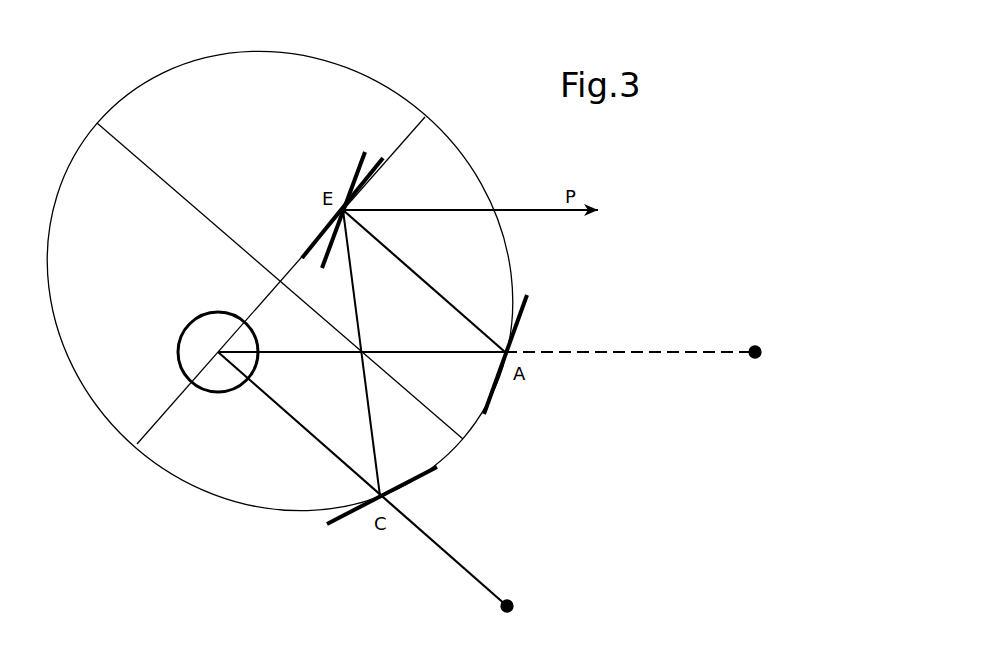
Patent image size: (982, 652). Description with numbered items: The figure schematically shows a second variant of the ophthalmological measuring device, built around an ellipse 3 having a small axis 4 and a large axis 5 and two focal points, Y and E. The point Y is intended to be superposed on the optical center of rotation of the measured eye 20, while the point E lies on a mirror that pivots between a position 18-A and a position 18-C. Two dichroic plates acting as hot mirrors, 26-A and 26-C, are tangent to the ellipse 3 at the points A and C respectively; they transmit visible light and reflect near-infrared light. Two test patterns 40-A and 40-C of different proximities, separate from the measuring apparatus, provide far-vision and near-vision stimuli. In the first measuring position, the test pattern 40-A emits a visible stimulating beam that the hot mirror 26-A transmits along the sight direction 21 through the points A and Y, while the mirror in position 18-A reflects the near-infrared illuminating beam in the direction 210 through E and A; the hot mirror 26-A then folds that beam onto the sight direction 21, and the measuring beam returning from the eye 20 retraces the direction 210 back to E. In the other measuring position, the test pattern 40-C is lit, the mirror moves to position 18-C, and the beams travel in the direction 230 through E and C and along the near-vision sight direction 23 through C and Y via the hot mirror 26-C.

The ellipse 3 is at (313, 55).
The small axis 4 is at (125, 145).
The large axis 5 is at (162, 435).
The position of the mirror 18-A is at (361, 150).
The position of the mirror 18-C is at (377, 168).
The eye 20 is at (177, 364).
The sight direction 21 is at (279, 350).
The sight direction 23 is at (298, 430).
The dichroic plate 26-A is at (527, 314).
The dichroic plate 26-C is at (344, 516).
The test pattern 40-A is at (758, 346).
The test pattern 40-C is at (509, 598).
The direction 210 is at (396, 252).
The direction 230 is at (358, 280).